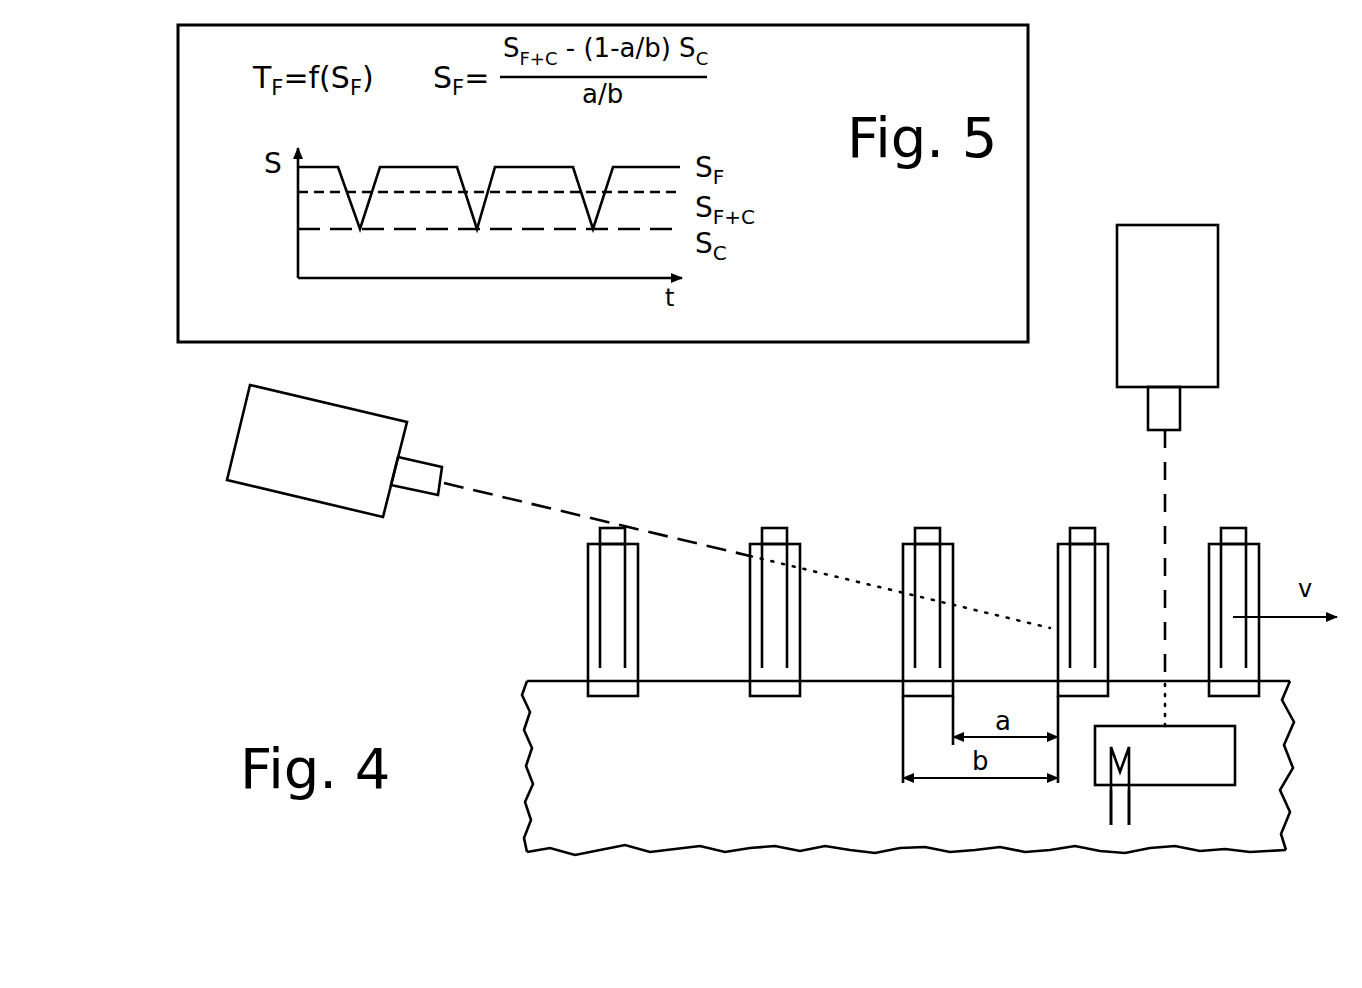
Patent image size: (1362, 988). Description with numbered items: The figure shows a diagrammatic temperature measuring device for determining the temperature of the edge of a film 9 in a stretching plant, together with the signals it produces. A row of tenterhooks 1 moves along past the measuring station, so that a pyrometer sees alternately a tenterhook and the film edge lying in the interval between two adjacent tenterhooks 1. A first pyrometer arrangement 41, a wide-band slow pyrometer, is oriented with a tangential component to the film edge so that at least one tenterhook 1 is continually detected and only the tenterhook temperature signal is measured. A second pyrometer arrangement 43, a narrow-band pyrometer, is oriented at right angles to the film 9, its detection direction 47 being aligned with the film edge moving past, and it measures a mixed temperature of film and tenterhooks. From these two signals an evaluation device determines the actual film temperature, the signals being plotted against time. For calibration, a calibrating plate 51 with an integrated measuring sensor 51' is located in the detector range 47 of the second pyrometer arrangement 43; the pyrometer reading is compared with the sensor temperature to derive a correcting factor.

The tenterhook 1 is at (777, 547).
The film 9 is at (556, 775).
The first pyrometer arrangement 41 is at (373, 427).
The second pyrometer arrangement 43 is at (1205, 272).
The detection direction 47 is at (1172, 487).
The calibrating plate 51 is at (1163, 796).
The measuring sensor 51' is at (1099, 845).
The control unit / timer T is at (1197, 748).